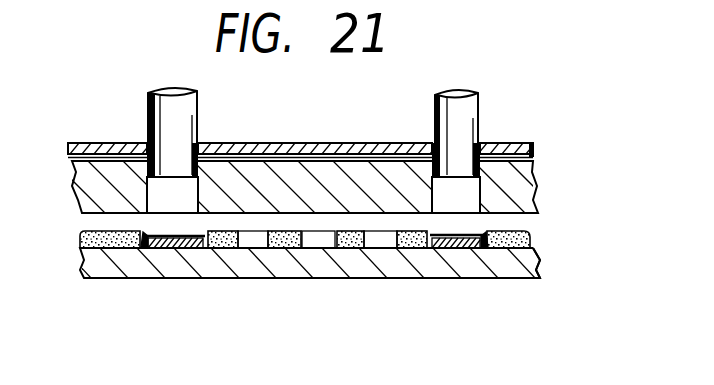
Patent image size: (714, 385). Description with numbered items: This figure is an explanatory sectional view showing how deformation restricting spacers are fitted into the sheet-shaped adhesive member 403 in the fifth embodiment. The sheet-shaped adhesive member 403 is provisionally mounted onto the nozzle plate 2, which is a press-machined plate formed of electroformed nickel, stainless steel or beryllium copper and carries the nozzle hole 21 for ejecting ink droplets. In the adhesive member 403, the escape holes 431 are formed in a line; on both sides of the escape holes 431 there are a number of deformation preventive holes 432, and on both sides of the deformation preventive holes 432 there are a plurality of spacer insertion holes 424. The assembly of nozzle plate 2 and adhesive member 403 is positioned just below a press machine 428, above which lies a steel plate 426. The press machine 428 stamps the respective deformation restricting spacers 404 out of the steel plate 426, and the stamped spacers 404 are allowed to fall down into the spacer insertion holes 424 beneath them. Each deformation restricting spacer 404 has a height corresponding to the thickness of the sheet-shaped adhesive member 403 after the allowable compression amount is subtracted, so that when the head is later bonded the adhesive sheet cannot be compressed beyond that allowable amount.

The nozzle plate 2 is at (524, 266).
The nozzle hole 21 is at (318, 276).
The sheet-shaped adhesive member 403 is at (104, 250).
The deformation restricting spacer 404 is at (182, 248).
The spacer insertion hole 424 is at (136, 247).
The steel plate 426 is at (488, 148).
The press machine 428 is at (510, 164).
The escape hole 431 is at (322, 238).
The deformation preventive hole 432 is at (262, 243).